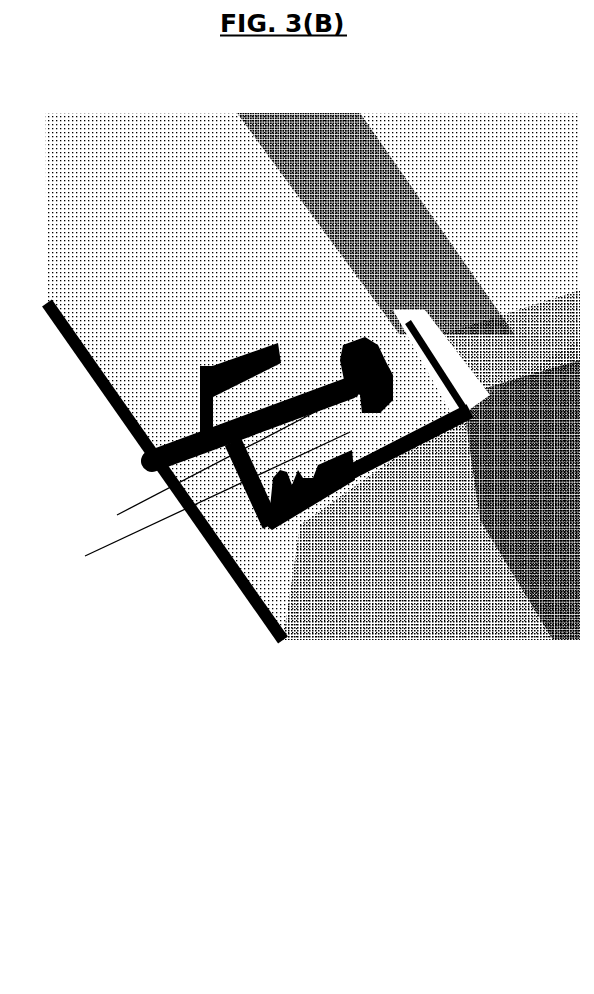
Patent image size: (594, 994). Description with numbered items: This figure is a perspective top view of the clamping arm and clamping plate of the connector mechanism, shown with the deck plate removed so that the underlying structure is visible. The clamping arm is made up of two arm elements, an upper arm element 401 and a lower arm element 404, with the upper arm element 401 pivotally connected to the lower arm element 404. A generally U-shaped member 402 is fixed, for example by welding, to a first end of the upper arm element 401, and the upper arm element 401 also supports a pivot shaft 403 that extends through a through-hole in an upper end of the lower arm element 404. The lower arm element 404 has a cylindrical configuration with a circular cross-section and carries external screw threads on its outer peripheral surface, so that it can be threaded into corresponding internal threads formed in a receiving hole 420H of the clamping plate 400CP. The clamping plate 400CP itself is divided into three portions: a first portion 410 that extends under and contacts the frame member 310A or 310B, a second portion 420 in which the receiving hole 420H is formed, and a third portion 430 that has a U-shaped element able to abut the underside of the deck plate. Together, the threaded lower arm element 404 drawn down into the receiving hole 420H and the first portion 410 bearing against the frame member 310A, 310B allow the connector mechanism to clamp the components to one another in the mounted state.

The upper arm element 401 is at (172, 436).
The U-shaped member 402 is at (338, 345).
The pivot shaft 403 is at (357, 390).
The lower arm element 404 is at (350, 432).
The first portion 410 is at (473, 337).
The second portion 420 is at (412, 420).
The receiving hole 420H is at (395, 392).
The third portion 430 is at (285, 527).
The clamping plate 400CP is at (210, 473).
The frame member 310A is at (498, 576).
The frame member 310B is at (558, 377).